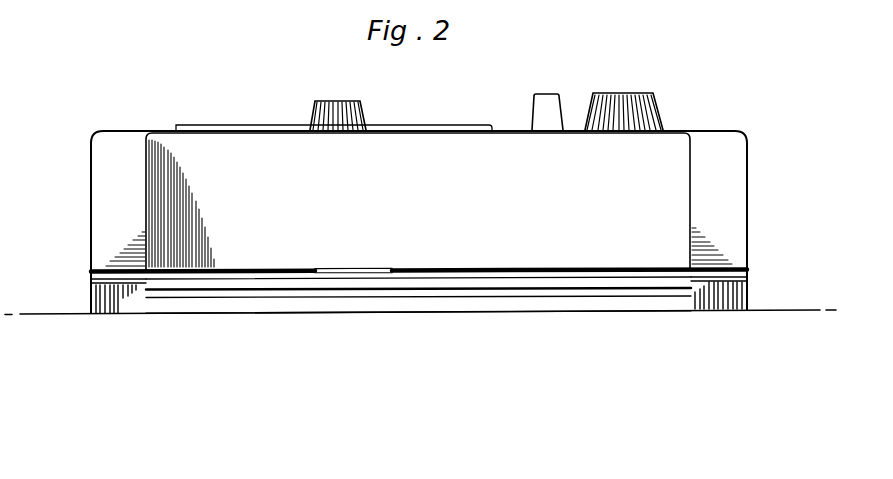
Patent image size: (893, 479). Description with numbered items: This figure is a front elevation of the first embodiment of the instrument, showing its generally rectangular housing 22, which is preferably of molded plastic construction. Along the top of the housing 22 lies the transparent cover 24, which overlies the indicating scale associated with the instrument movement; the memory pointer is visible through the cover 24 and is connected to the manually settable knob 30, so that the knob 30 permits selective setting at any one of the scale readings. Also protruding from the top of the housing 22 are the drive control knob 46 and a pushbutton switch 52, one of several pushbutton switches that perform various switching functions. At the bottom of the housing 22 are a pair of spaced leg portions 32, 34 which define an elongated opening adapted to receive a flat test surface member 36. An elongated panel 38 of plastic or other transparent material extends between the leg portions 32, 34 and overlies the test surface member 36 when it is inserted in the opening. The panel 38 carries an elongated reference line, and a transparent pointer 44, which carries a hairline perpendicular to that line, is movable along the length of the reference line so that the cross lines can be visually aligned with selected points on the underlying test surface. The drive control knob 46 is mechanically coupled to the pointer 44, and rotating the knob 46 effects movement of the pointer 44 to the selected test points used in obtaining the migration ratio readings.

The housing 22 is at (713, 138).
The transparent cover 24 is at (213, 125).
The manually settable knob 30 is at (338, 113).
The leg portion 32 is at (98, 298).
The leg portion 34 is at (738, 278).
The flat test surface member 36 is at (413, 304).
The elongated panel 38 is at (437, 283).
The transparent pointer 44 is at (342, 270).
The drive control knob 46 is at (622, 106).
The pushbutton switch 52 is at (543, 105).